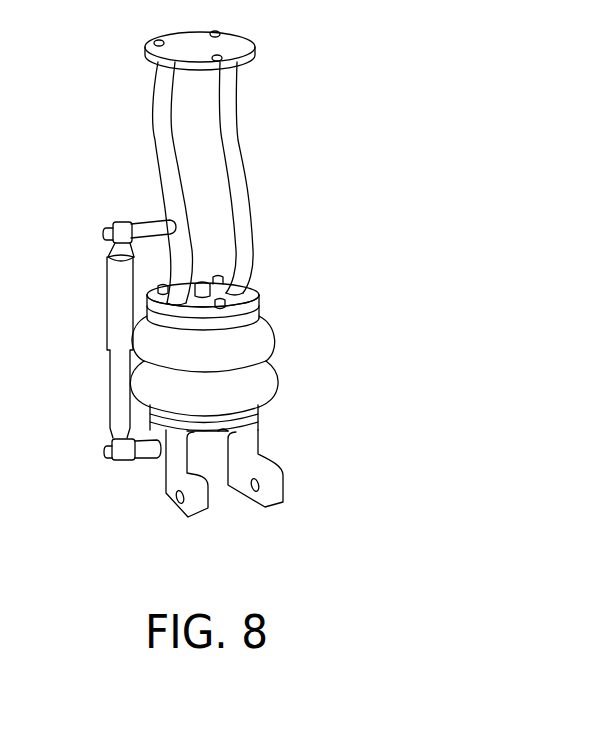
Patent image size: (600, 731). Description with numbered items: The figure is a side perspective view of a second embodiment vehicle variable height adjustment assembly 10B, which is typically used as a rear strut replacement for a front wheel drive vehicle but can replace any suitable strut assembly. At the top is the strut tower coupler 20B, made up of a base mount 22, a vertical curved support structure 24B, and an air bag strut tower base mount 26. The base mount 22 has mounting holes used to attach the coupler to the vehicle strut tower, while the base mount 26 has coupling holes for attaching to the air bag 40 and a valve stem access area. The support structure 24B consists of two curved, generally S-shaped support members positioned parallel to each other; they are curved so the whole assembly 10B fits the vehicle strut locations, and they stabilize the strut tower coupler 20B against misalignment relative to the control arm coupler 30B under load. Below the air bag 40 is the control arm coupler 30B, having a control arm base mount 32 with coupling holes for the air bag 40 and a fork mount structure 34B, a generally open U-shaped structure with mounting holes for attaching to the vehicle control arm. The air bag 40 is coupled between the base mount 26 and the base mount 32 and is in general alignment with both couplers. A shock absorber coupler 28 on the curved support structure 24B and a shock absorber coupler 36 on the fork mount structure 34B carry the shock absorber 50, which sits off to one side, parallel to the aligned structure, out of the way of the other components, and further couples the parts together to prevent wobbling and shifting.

The vehicle variable height adjustment assembly 10B is at (124, 90).
The strut tower coupler 20B is at (254, 92).
The base mount 22 is at (241, 42).
The vertical curved support structure 24B is at (266, 209).
The air bag strut tower base mount 26 is at (256, 292).
The shock absorber coupler 28 is at (148, 231).
The shock absorber 50 is at (118, 298).
The air bag 40 is at (265, 370).
The control arm base mount 32 is at (257, 416).
The control arm coupler 30B is at (297, 466).
The fork mount structure 34B is at (252, 455).
The shock absorber coupler 36 is at (142, 456).